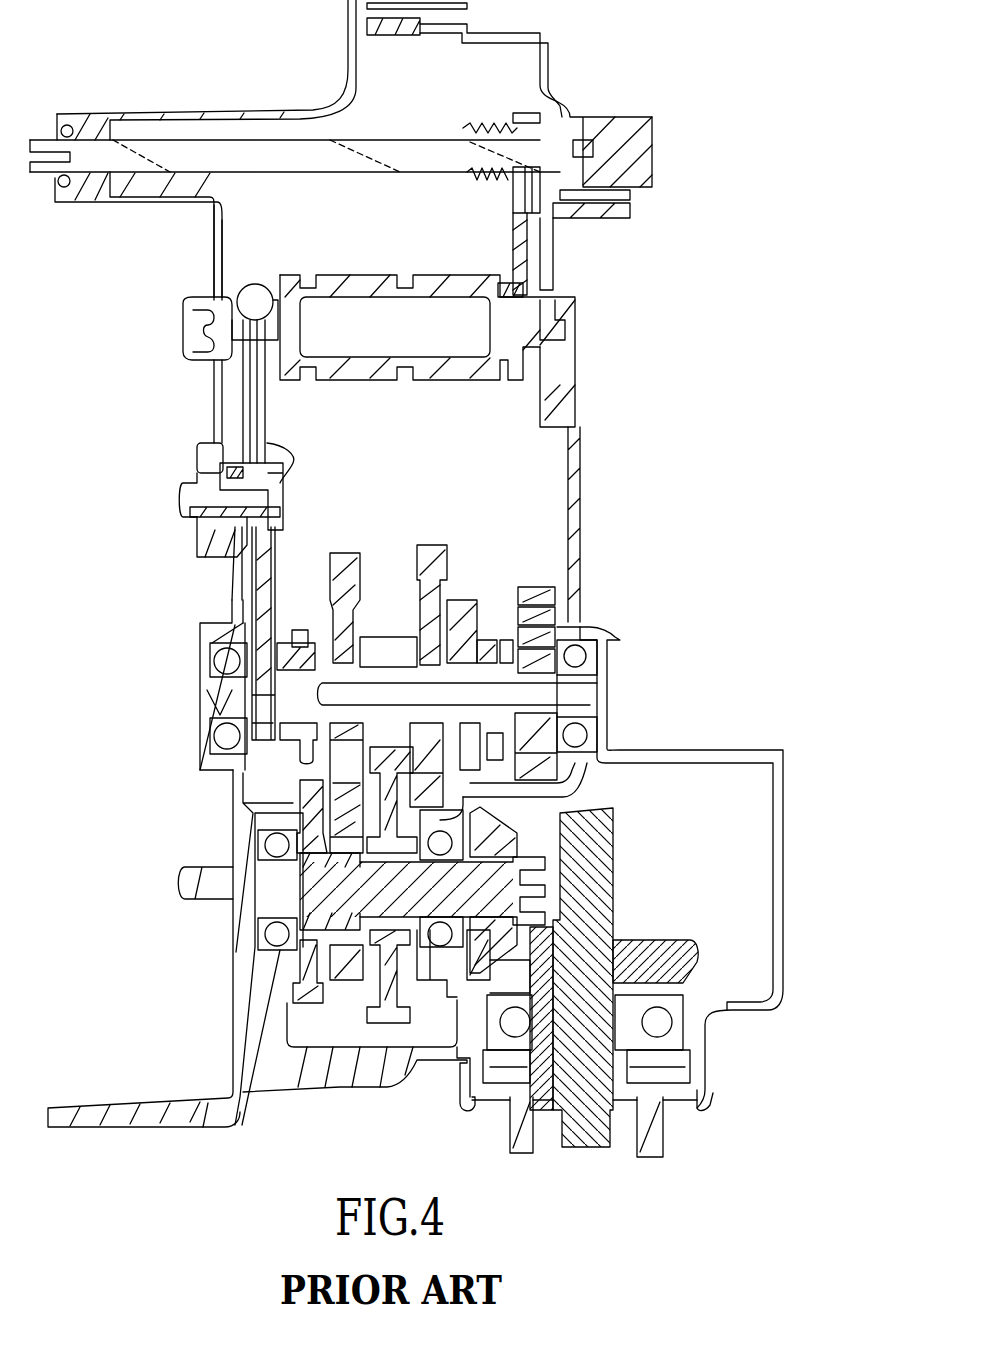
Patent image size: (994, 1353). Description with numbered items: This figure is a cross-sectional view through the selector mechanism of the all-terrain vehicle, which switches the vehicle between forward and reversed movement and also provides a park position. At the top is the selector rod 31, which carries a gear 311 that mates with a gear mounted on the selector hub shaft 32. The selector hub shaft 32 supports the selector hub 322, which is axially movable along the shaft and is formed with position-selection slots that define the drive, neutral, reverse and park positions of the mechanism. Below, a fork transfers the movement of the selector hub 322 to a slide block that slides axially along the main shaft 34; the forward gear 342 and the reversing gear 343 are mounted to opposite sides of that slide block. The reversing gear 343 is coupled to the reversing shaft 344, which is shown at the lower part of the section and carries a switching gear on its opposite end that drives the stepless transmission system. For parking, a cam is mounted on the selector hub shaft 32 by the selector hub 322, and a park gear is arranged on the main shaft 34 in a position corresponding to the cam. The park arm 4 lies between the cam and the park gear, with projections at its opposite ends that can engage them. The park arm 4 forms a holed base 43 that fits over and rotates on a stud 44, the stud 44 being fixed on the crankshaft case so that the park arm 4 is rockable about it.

The selector rod 31 is at (200, 114).
The gear 311 is at (537, 240).
The selector hub 322 is at (470, 277).
The selector hub shaft 32 is at (590, 347).
The park arm 4 is at (240, 400).
The stud 44 is at (285, 465).
The holed base 43 is at (205, 508).
The forward gear 342 is at (343, 563).
The reversing gear 343 is at (445, 560).
The main shaft 34 is at (600, 677).
The reversing shaft 344 is at (253, 860).